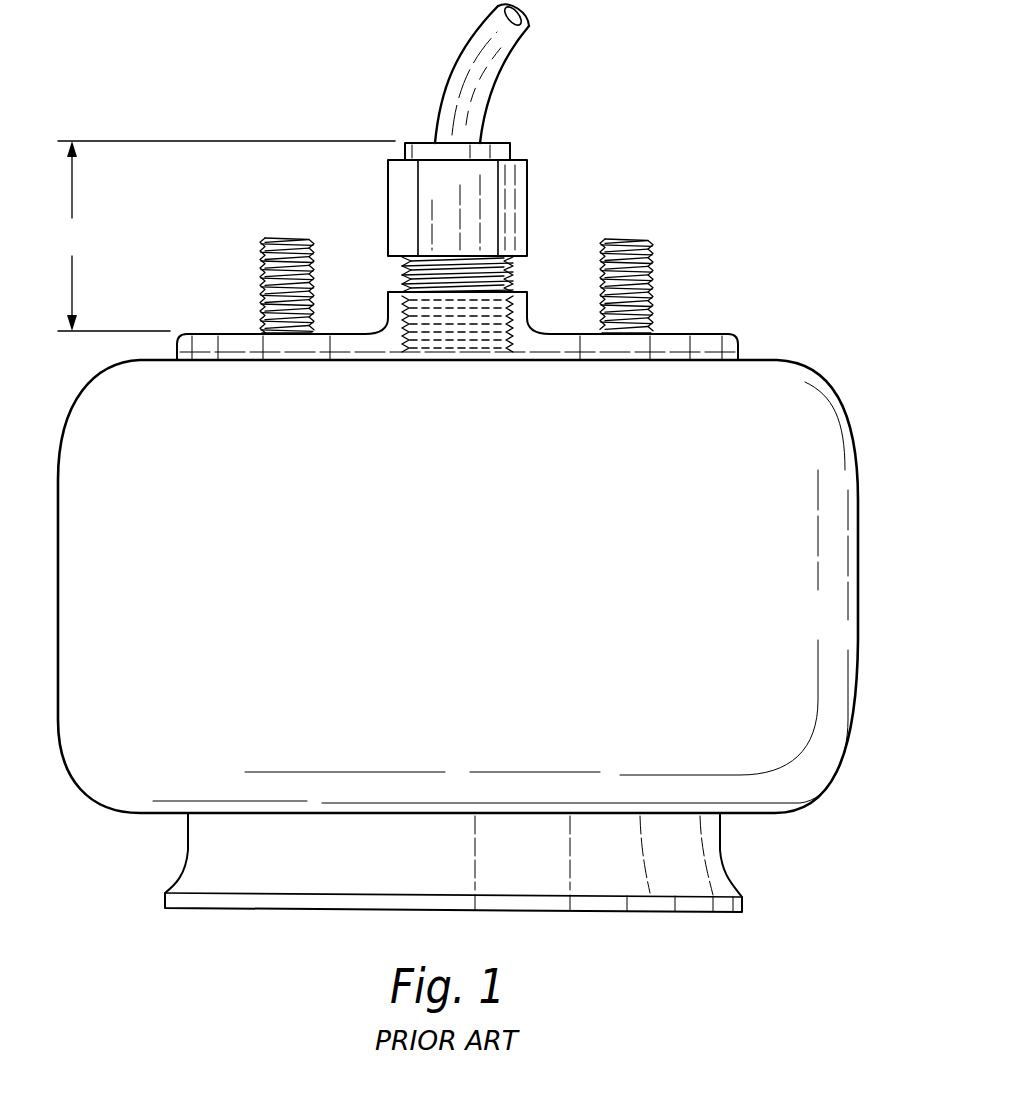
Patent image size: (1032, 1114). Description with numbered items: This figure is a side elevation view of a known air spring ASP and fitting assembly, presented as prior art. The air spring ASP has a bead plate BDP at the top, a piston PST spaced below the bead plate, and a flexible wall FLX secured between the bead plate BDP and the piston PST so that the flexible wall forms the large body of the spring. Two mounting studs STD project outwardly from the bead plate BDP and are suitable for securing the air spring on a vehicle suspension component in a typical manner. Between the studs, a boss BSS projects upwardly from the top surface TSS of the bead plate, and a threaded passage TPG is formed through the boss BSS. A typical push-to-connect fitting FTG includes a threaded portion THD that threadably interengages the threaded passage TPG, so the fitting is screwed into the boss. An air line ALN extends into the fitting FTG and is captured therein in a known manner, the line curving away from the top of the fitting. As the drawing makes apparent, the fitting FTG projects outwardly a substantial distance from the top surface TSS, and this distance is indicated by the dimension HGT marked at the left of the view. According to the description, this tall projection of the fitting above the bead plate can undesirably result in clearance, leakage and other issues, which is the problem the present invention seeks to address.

The air spring ASP is at (89, 812).
The flexible wall FLX is at (856, 540).
The piston PST is at (692, 912).
The bead plate BDP is at (742, 346).
The top surface TSS is at (676, 334).
The boss BSS is at (528, 322).
The threaded passage TPG is at (397, 320).
The threaded portion THD is at (400, 270).
The push-to-connect fitting FTG is at (540, 162).
The air line ALN is at (468, 50).
The mounting studs STD is at (287, 260).
The dimension HGT is at (222, 236).